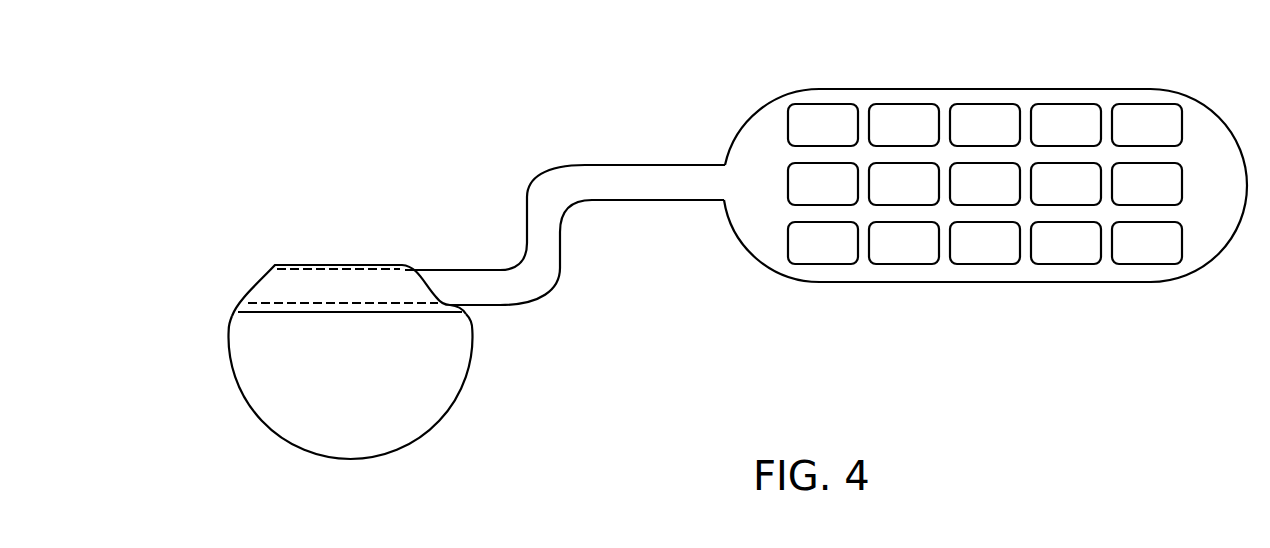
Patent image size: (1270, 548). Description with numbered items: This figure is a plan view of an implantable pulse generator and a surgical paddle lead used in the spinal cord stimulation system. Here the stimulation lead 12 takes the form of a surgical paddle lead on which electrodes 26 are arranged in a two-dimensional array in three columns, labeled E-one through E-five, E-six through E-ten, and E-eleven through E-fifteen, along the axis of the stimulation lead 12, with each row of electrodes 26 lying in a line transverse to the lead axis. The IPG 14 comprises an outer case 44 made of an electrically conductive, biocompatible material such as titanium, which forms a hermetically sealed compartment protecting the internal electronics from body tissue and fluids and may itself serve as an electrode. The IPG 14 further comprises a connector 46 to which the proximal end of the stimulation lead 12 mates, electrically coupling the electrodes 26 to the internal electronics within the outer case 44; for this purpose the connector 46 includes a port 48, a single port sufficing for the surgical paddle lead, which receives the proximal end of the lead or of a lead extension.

The stimulation lead 12 is at (551, 175).
The IPG 14 is at (281, 229).
The electrodes 26 is at (978, 103).
The outer case 44 is at (473, 350).
The connector 46 is at (356, 265).
The port 48 is at (762, 123).